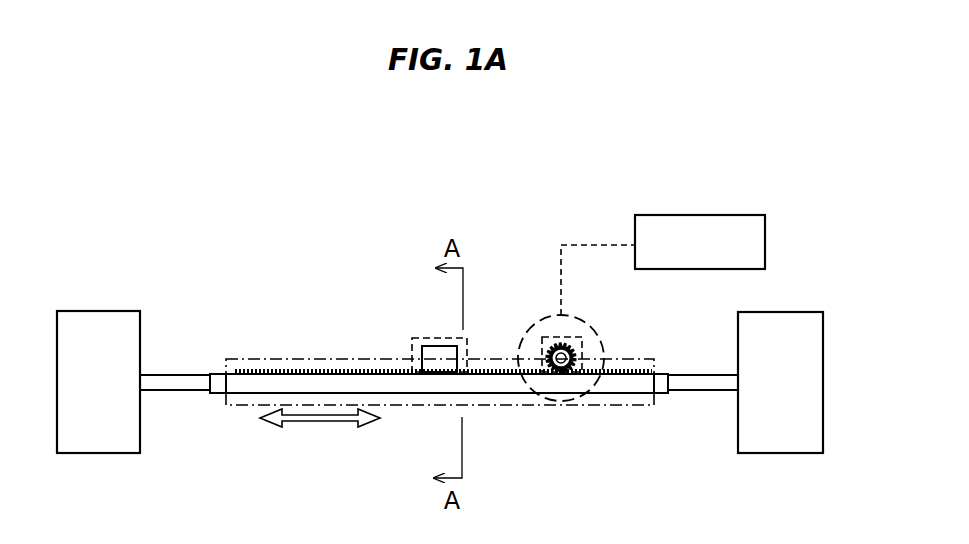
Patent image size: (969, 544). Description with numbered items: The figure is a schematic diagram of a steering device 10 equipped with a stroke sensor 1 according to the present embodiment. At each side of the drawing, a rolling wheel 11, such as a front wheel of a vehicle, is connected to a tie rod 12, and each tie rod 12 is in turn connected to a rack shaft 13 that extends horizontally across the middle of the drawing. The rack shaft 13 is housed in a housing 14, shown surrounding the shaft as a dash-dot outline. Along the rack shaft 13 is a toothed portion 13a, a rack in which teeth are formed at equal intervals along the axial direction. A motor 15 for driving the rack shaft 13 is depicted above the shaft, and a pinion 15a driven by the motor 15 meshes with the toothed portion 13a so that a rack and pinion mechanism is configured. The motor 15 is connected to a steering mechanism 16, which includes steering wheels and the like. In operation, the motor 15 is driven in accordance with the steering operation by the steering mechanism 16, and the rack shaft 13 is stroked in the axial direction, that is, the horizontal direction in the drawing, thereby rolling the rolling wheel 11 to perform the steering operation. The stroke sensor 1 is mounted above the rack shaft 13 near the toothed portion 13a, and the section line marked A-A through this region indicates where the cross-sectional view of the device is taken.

The steering device 10 is at (165, 236).
The rolling wheel 11 is at (99, 311).
The tie rod 12 is at (178, 382).
The rack shaft 13 is at (248, 392).
The toothed portion 13a is at (290, 370).
The housing 14 is at (443, 406).
The stroke sensor 1 is at (436, 362).
The motor 15 is at (595, 327).
The pinion 15a is at (549, 347).
The steering mechanism 16 is at (711, 214).